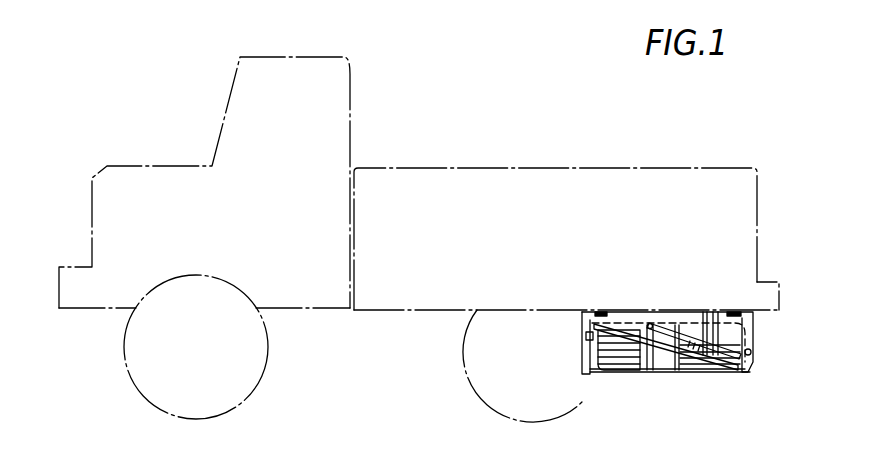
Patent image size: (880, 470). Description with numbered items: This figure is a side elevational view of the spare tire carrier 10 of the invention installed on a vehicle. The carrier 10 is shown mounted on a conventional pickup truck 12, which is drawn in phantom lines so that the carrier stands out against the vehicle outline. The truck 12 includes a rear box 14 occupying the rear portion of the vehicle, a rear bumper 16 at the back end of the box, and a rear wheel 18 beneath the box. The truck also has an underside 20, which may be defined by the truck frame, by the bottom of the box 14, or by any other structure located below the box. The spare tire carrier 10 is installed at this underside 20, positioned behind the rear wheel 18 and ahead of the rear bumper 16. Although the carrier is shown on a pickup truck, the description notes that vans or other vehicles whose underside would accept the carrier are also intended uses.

The spare tire carrier 10 is at (688, 386).
The pickup truck 12 is at (352, 114).
The rear box 14 is at (547, 170).
The rear bumper 16 is at (775, 277).
The rear wheel 18 is at (465, 386).
The underside 20 is at (557, 313).